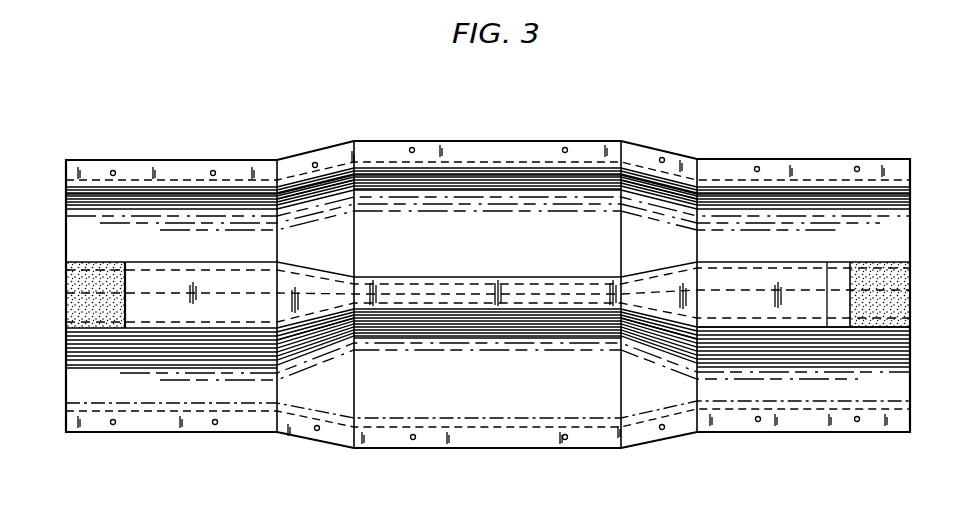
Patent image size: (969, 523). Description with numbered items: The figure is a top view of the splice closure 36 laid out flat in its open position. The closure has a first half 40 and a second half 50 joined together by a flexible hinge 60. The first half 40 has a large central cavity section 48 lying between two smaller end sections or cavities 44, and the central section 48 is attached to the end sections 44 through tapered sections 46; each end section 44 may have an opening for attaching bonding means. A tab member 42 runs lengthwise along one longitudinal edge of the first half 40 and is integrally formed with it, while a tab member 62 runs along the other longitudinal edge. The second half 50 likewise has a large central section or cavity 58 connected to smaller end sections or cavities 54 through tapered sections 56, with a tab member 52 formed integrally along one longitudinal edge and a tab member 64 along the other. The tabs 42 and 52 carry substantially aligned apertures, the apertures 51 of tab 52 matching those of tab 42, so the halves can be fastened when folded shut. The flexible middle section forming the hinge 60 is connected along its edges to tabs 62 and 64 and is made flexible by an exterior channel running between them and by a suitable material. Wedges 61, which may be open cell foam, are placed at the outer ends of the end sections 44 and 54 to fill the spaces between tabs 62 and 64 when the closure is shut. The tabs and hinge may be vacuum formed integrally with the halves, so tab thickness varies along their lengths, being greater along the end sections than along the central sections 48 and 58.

The closure 36 is at (506, 77).
The first half 40 is at (892, 390).
The tab member 42 is at (897, 418).
The end sections 44 is at (250, 390).
The tapered sections 46 is at (340, 410).
The central cavity section 48 is at (533, 398).
The second half 50 is at (887, 222).
The apertures 51 is at (114, 170).
The tab member 52 is at (893, 168).
The end sections 54 is at (232, 200).
The tapered sections 56 is at (318, 190).
The central section 58 is at (508, 185).
The flexible hinge 60 is at (898, 293).
The wedges 61 is at (72, 283).
The tab member 62 is at (912, 312).
The tab member 64 is at (912, 276).